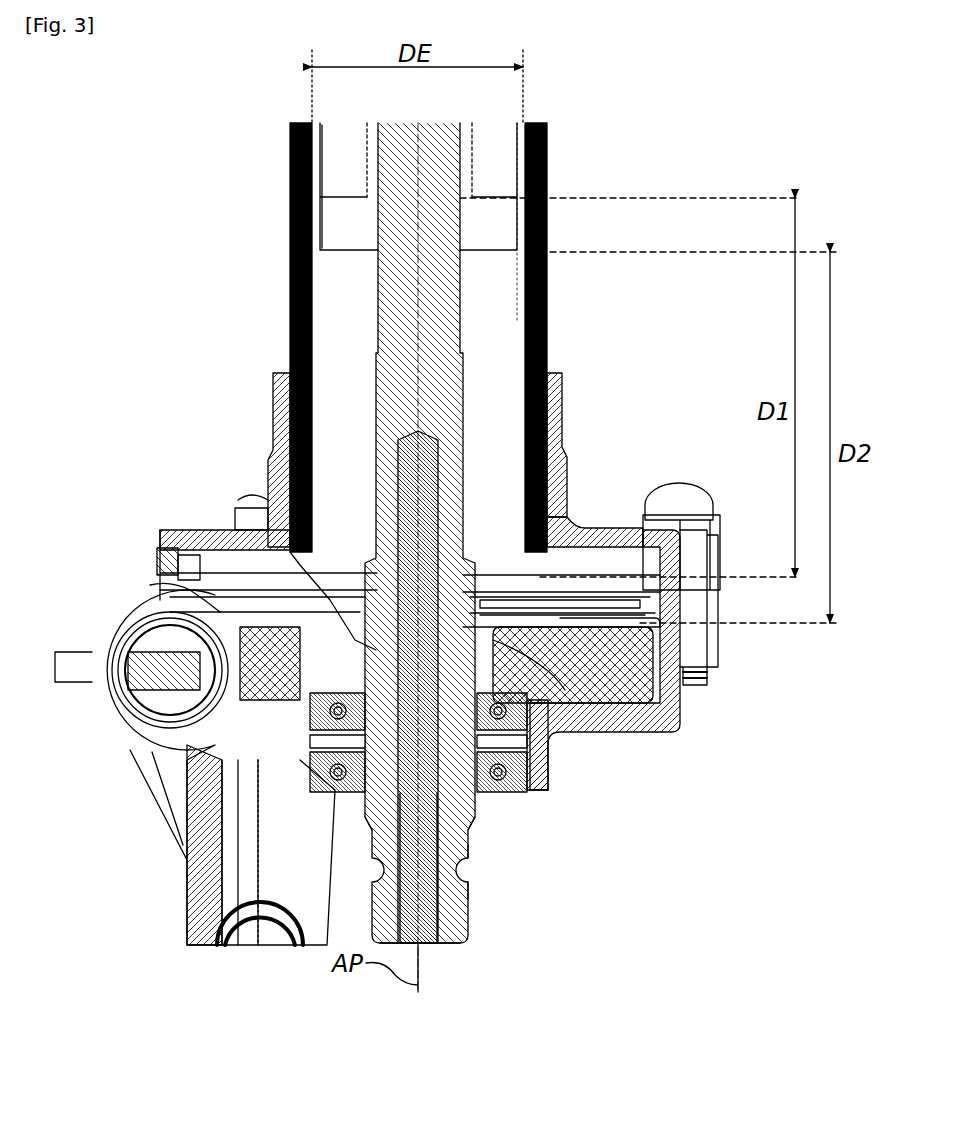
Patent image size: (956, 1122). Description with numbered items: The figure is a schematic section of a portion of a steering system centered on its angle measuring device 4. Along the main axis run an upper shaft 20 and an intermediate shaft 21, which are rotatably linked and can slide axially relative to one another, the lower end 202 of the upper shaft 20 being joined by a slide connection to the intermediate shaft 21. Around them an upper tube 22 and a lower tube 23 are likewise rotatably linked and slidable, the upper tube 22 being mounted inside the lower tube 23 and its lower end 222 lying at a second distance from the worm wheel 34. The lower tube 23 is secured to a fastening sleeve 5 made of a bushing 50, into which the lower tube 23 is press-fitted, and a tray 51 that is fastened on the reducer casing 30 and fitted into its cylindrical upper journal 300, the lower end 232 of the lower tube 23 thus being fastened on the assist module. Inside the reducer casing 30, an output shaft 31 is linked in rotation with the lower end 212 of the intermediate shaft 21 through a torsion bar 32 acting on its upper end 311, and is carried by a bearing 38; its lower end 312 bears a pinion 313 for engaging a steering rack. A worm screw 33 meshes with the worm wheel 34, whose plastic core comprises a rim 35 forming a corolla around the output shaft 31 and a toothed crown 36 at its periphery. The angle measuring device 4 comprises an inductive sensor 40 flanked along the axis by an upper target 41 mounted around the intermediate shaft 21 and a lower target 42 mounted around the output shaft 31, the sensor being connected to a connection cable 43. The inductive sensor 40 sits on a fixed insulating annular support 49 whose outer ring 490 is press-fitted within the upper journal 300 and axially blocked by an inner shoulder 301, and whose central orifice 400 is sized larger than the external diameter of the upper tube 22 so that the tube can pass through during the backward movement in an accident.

The angle measuring device 4 is at (578, 572).
The fastening sleeve 5 is at (260, 372).
The upper shaft 20 is at (372, 145).
The intermediate shaft 21 is at (383, 348).
The upper tube 22 is at (520, 235).
The lower tube 23 is at (547, 306).
The reducer casing 30 is at (640, 725).
The output shaft 31 is at (472, 932).
The torsion bar 32 is at (400, 830).
The worm screw 33 is at (160, 675).
The worm wheel 34 is at (640, 690).
The rim 35 is at (540, 710).
The toothed crown 36 is at (590, 705).
The bearing 38 is at (325, 760).
The inductive sensor 40 is at (640, 615).
The upper target 41 is at (620, 595).
The lower target 42 is at (645, 620).
The connection cable 43 is at (720, 653).
The annular support 49 is at (210, 600).
The bushing 50 is at (557, 378).
The tray 51 is at (617, 525).
The lower end of the upper shaft 202 is at (367, 205).
The lower end of the intermediate shaft 212 is at (248, 505).
The lower end of the upper tube 222 is at (342, 256).
The lower end of the lower tube 232 is at (565, 520).
The upper journal 300 is at (170, 545).
The inner shoulder 301 is at (150, 590).
The upper end of the output shaft 311 is at (355, 560).
The lower end of the output shaft 312 is at (445, 944).
The pinion 313 is at (470, 845).
The central orifice 400 is at (480, 600).
The outer ring 490 is at (163, 575).